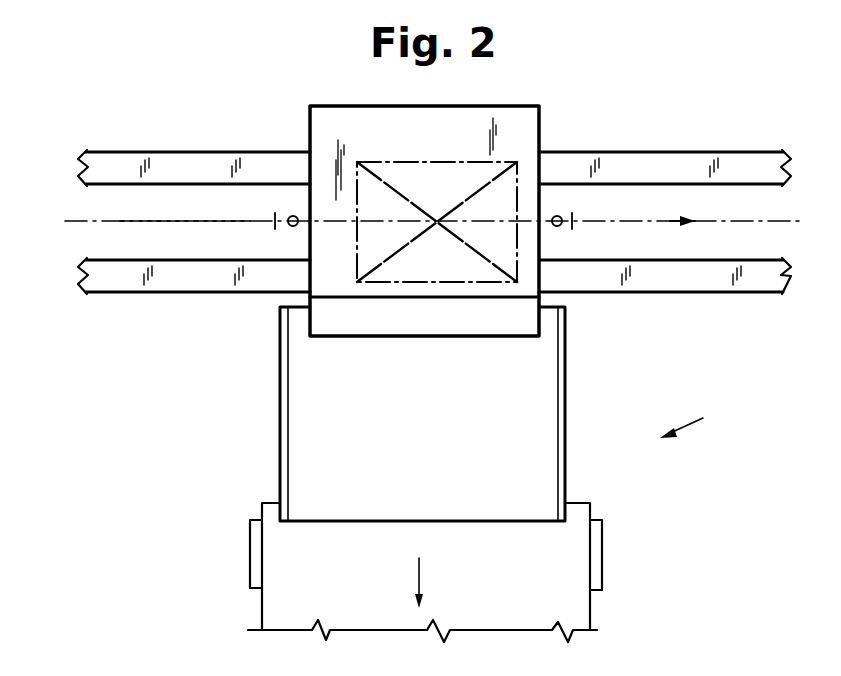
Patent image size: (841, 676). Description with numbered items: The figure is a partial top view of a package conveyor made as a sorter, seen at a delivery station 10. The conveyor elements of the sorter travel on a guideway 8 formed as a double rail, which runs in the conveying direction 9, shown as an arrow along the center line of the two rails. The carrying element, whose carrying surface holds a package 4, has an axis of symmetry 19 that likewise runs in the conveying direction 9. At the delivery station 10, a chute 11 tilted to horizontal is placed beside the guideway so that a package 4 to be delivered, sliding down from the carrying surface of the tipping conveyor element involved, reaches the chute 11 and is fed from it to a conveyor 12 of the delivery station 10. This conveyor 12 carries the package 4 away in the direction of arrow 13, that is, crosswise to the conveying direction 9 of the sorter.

The package 4 is at (448, 178).
The guideway 8 is at (712, 160).
The conveying direction 9 is at (657, 221).
The delivery station 10 is at (702, 419).
The chute 11 is at (538, 380).
The conveyor 12 is at (578, 613).
The arrow 13 is at (419, 569).
The axis of symmetry 19 is at (182, 221).